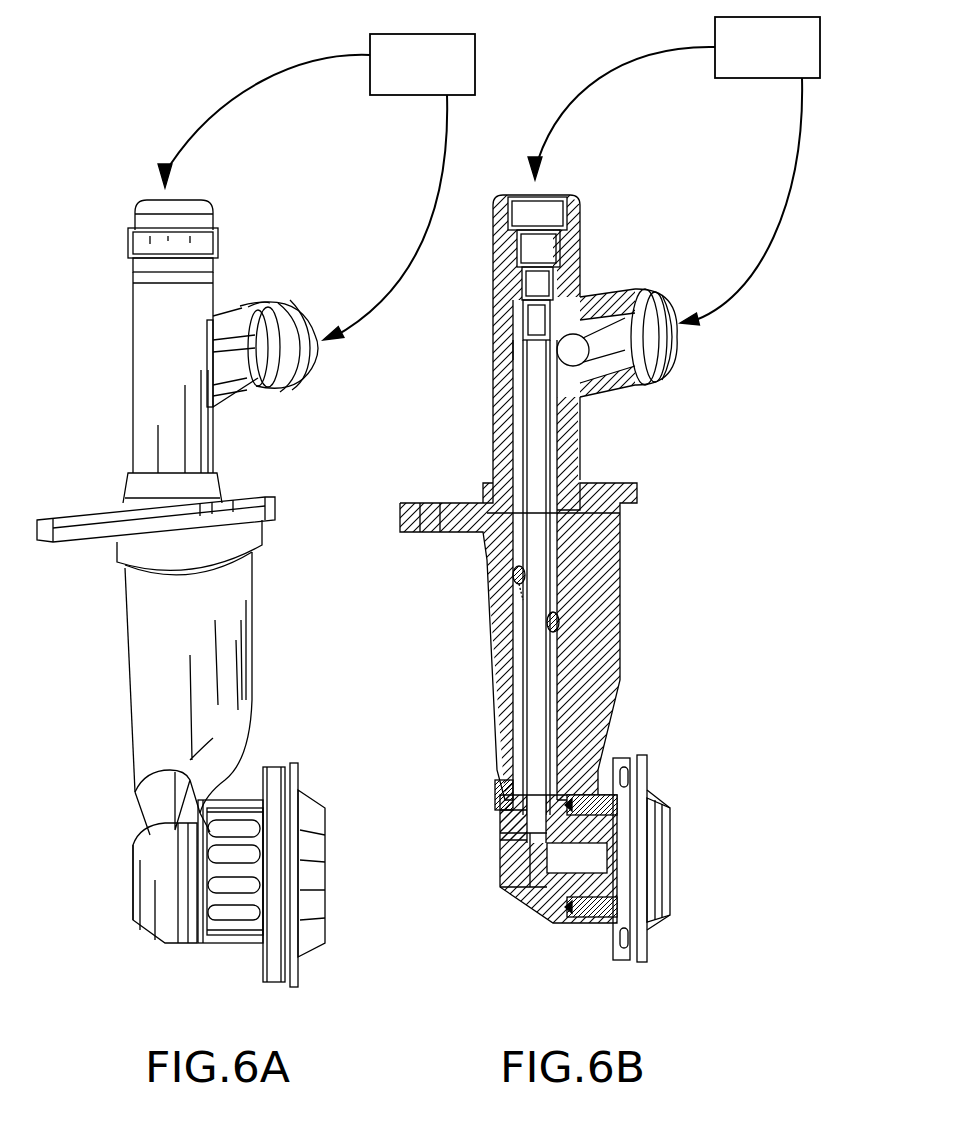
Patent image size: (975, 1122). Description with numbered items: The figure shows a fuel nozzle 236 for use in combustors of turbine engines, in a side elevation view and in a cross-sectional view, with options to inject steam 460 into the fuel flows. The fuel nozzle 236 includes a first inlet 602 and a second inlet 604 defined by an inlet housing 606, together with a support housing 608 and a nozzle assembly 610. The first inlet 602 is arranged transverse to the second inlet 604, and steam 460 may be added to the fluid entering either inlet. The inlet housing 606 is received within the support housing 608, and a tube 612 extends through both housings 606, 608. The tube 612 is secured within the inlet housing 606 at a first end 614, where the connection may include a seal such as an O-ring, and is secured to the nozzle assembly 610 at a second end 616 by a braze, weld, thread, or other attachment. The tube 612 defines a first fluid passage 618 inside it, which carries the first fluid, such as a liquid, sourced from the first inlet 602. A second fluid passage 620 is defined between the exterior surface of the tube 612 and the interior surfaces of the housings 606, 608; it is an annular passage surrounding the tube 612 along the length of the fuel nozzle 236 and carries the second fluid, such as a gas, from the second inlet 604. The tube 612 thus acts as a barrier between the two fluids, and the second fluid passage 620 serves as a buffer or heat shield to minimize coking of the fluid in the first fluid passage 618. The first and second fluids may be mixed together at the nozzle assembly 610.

In FIG. 6A, the steam 460 is at (378, 39).
In FIG. 6B, the steam 460 is at (720, 22).
In FIG. 6A, the first inlet 602 is at (120, 219).
In FIG. 6B, the first inlet 602 is at (610, 184).
In FIG. 6A, the second inlet 604 is at (292, 287).
In FIG. 6B, the second inlet 604 is at (638, 283).
In FIG. 6A, the inlet housing 606 is at (106, 368).
In FIG. 6B, the inlet housing 606 is at (488, 406).
In FIG. 6A, the fuel nozzle 236 is at (96, 488).
In FIG. 6A, the support housing 608 is at (106, 681).
In FIG. 6B, the support housing 608 is at (628, 607).
In FIG. 6A, the nozzle assembly 610 is at (282, 744).
In FIG. 6B, the nozzle assembly 610 is at (666, 772).
In FIG. 6B, the tube 612 is at (580, 418).
In FIG. 6B, the first end 614 is at (512, 340).
In FIG. 6B, the second end 616 is at (500, 812).
In FIG. 6B, the first fluid passage 618 is at (532, 684).
In FIG. 6B, the second fluid passage 620 is at (512, 622).